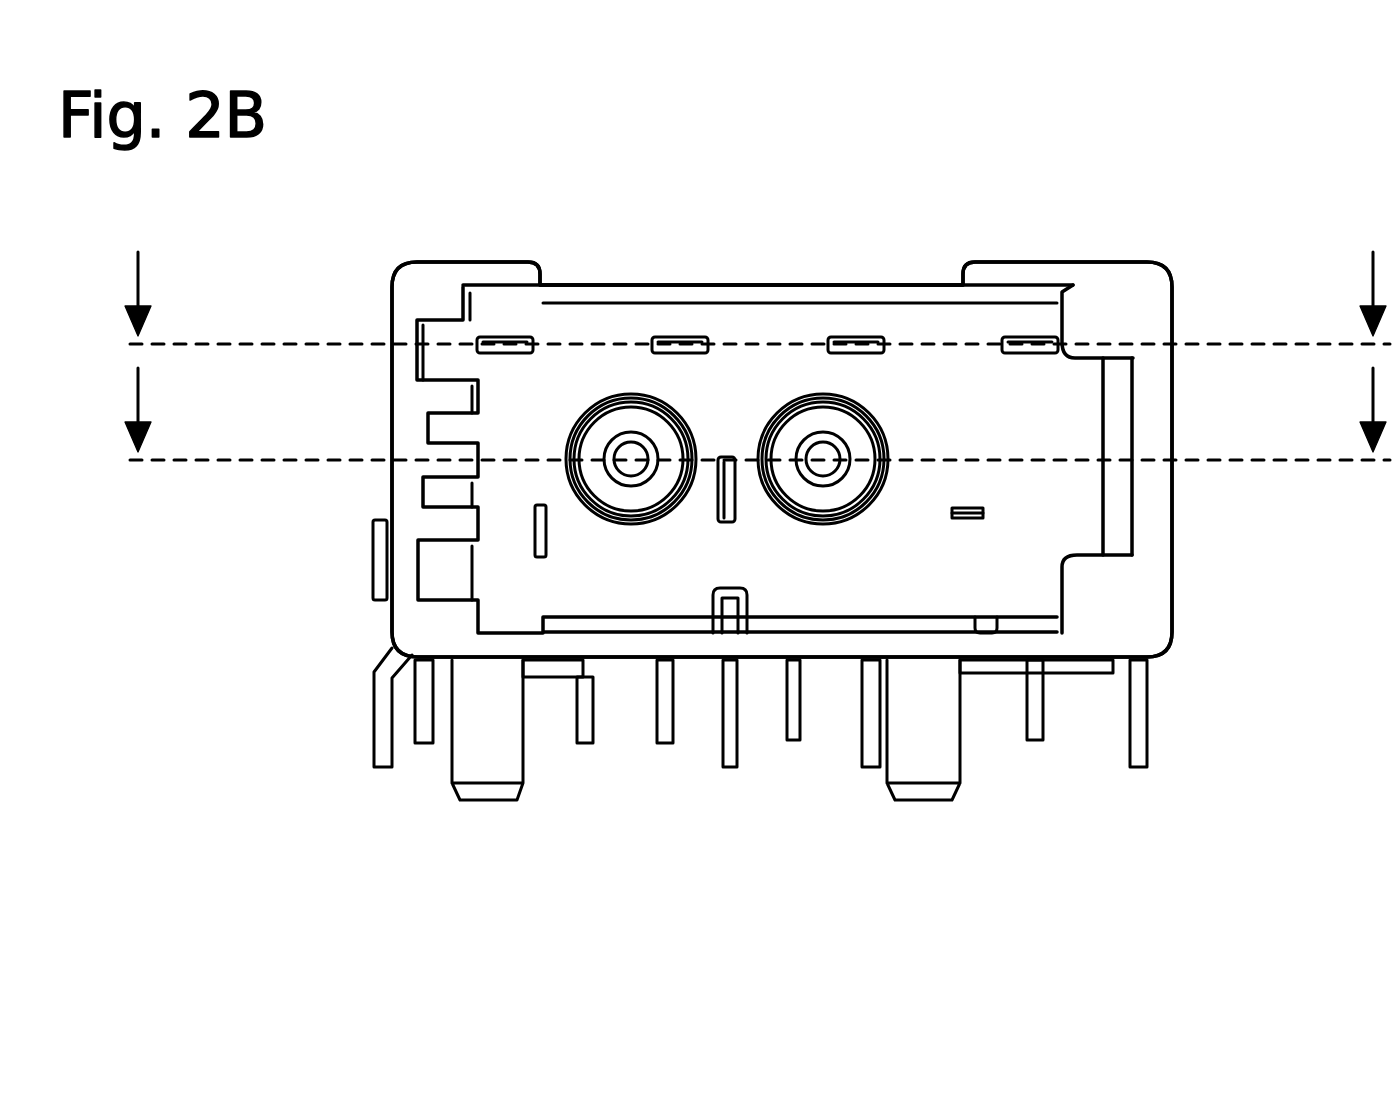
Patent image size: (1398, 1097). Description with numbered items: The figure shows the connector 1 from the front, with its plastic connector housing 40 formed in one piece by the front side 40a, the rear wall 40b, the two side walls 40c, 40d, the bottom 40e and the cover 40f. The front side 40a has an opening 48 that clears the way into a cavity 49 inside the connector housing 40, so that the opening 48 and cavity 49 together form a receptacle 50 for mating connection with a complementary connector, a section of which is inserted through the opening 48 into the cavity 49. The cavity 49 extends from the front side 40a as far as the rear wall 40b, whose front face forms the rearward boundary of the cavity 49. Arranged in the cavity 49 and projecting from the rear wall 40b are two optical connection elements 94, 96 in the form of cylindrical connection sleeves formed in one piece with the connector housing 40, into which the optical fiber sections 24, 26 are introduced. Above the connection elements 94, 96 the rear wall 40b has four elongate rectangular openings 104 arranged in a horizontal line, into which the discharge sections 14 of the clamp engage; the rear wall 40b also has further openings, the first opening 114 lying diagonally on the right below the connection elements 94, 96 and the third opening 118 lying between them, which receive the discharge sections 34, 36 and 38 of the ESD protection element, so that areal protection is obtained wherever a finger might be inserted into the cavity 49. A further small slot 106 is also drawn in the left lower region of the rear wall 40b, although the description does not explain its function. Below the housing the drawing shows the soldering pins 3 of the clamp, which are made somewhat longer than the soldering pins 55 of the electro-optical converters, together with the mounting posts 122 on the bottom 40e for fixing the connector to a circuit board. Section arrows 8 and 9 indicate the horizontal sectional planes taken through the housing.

The connector 1 is at (1268, 228).
The soldering pins 3 is at (1138, 870).
The section line 8- 8 is at (757, 294).
The section line 9- 9 is at (757, 410).
The discharge sections 14 is at (1030, 337).
The optical fiber section 24 is at (832, 465).
The optical fiber section 26 is at (607, 452).
The discharge section 34 is at (1040, 553).
The discharge section 36 is at (530, 527).
The discharge section 38 is at (737, 457).
The connector housing 40 is at (1172, 570).
The front side 40a is at (1107, 272).
The rear wall 40b is at (1002, 585).
The side wall 40c is at (1150, 512).
The side wall 40d is at (405, 497).
The bottom 40e is at (623, 643).
The cover 40f is at (604, 282).
The opening 48 is at (920, 375).
The cavity 49 is at (1062, 522).
The receptacle 50 is at (832, 572).
The soldering pins 55 is at (1070, 870).
The optical connection element 94 is at (857, 517).
The optical connection element 96 is at (663, 517).
The openings 104 is at (983, 440).
The key slot 106 is at (547, 547).
The first opening 114 is at (1067, 502).
The third opening 118 is at (733, 507).
The mounting posts 122 is at (920, 870).